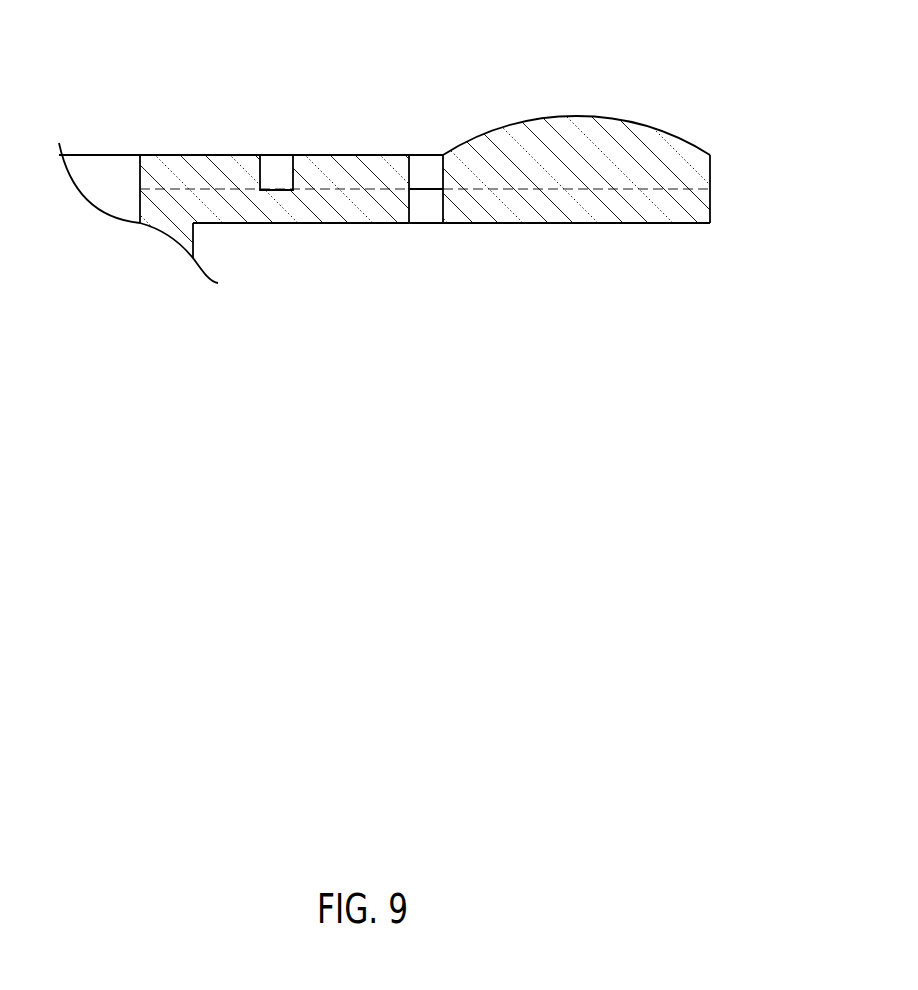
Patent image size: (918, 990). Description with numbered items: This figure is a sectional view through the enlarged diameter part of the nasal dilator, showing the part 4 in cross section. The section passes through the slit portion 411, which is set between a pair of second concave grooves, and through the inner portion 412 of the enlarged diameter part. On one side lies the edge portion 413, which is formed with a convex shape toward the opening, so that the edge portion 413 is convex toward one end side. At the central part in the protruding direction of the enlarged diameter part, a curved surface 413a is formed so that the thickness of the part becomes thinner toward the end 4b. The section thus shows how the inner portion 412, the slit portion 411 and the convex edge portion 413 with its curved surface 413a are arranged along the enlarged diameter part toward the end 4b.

The fixing member 4 is at (562, 88).
The curved surface 413a is at (600, 117).
The end 4b is at (711, 172).
The edge portion 413 is at (667, 218).
The inner portion 412 is at (272, 215).
The slit portion 411 is at (427, 212).